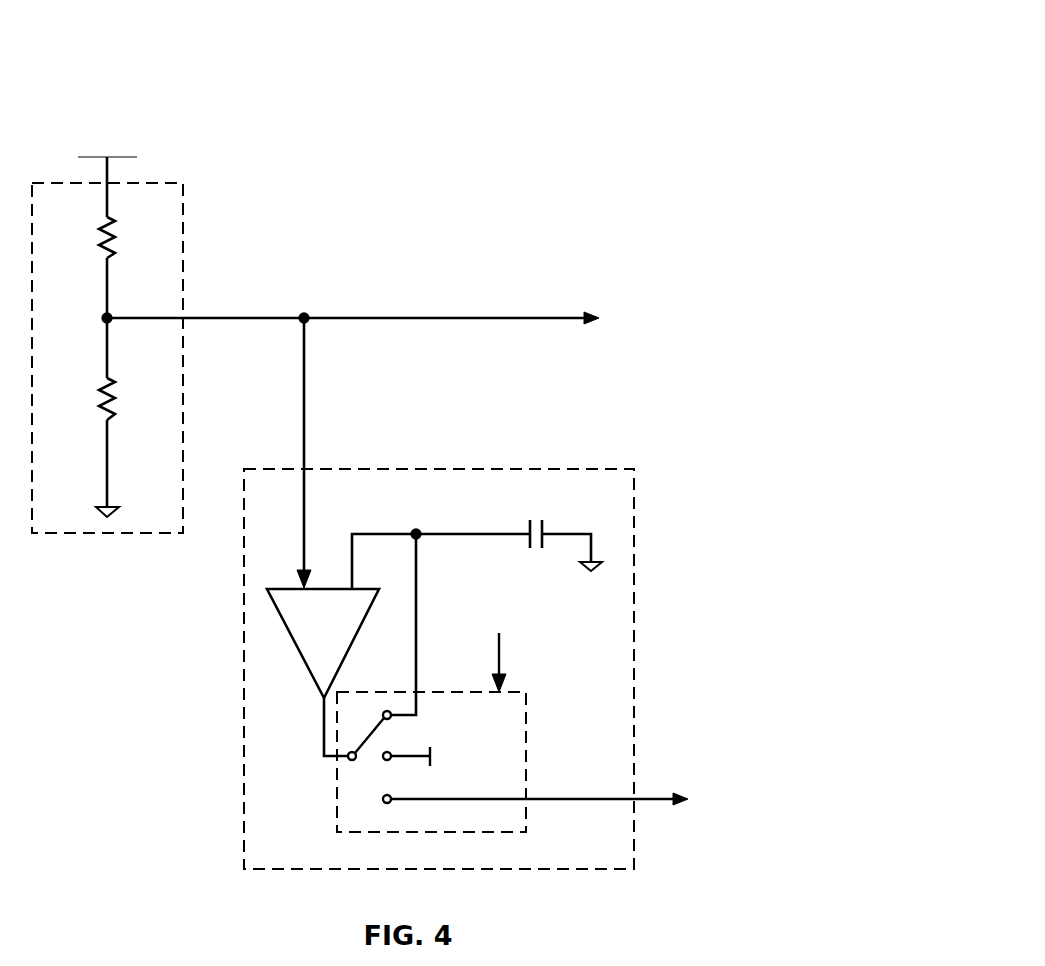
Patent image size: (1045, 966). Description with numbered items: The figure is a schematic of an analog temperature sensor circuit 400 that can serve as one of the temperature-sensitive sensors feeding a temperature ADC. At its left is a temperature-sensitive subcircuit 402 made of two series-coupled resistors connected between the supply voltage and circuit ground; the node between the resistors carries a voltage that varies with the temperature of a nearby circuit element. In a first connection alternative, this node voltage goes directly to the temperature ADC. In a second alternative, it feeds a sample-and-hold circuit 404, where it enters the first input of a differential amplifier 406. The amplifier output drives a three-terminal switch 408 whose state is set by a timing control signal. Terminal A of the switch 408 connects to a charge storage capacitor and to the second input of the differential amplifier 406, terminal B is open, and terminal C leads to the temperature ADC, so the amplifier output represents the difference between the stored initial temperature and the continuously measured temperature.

The analog temperature sensor circuit 400 is at (688, 32).
The temperature-sensitive subcircuit 402 is at (183, 217).
The sample-and-hold circuit 404 is at (633, 527).
The differential amplifier 406 is at (305, 667).
The 3-terminal switch 408 is at (526, 700).